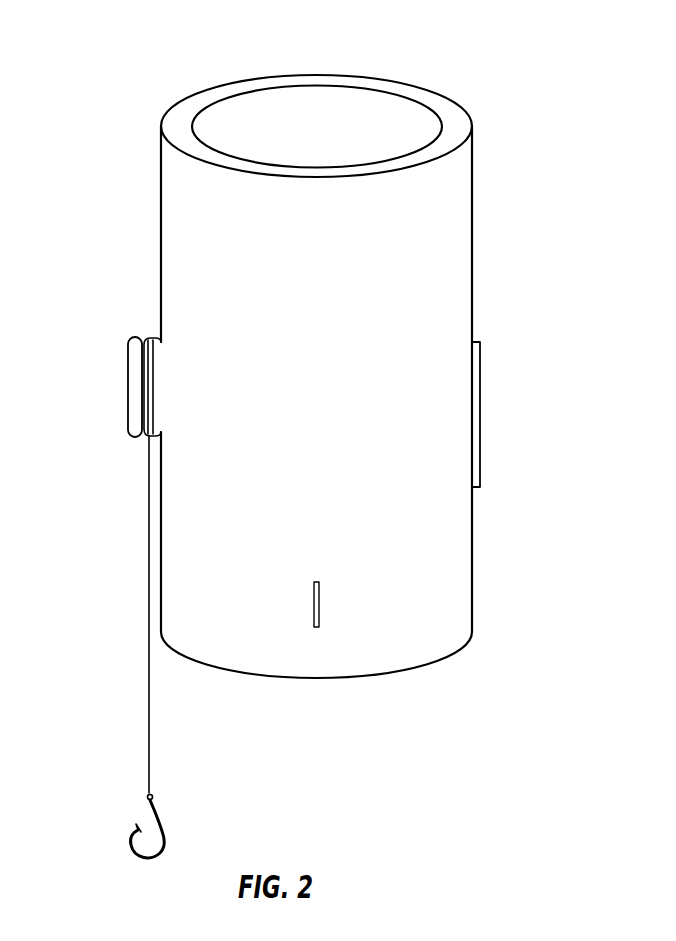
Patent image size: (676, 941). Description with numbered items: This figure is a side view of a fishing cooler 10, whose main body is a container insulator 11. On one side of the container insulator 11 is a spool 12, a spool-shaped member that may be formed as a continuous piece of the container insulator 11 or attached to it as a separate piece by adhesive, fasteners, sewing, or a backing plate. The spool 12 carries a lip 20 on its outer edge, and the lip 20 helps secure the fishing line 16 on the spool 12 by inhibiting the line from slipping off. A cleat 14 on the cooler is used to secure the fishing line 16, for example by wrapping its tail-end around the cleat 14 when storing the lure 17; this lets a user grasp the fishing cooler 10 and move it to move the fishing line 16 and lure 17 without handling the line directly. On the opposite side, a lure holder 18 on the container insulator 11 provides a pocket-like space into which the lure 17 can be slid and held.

The fishing cooler 10 is at (133, 50).
The container insulator 11 is at (440, 226).
The spool 12 is at (152, 341).
The cleat 14 is at (319, 612).
The fishing line 16 is at (148, 700).
The lure 17 is at (129, 836).
The lure holder 18 is at (481, 384).
The lip 20 is at (135, 430).